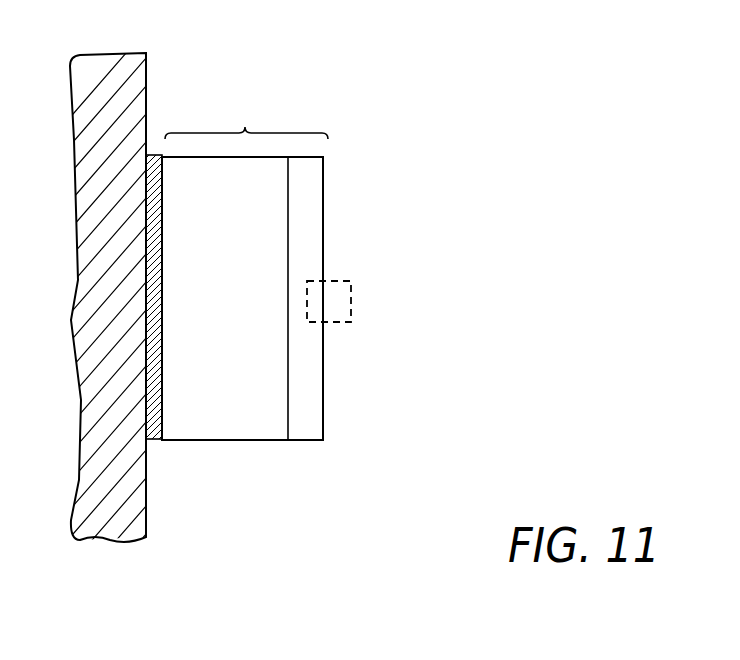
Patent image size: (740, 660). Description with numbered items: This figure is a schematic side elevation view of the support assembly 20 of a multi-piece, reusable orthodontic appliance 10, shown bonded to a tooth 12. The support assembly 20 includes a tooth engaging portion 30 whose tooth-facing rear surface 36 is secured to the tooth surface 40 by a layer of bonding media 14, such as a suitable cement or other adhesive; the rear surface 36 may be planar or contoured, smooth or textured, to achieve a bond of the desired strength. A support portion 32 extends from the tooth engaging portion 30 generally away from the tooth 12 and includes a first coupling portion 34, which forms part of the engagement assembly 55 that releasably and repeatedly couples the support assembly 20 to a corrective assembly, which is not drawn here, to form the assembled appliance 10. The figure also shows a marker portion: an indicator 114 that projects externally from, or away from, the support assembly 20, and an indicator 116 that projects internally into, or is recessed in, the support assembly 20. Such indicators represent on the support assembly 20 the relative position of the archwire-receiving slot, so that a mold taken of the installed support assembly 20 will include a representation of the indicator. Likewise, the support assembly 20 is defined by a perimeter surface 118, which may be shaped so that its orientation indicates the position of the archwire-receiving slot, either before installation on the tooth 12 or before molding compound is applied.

The orthodontic appliance 10 is at (345, 112).
The tooth 12 is at (158, 82).
The bonding media 14 is at (152, 152).
The support assembly 20 is at (245, 128).
The tooth engaging portion 30 is at (175, 452).
The support portion 32 is at (235, 458).
The first coupling portion 34 is at (302, 354).
The tooth-facing rear surface 36 is at (162, 324).
The tooth surface 40 is at (146, 513).
The engagement assembly 55 is at (322, 455).
The externally projecting indicator 114 is at (352, 323).
The internally projecting indicator 116 is at (306, 321).
The perimeter surface 118 is at (265, 425).